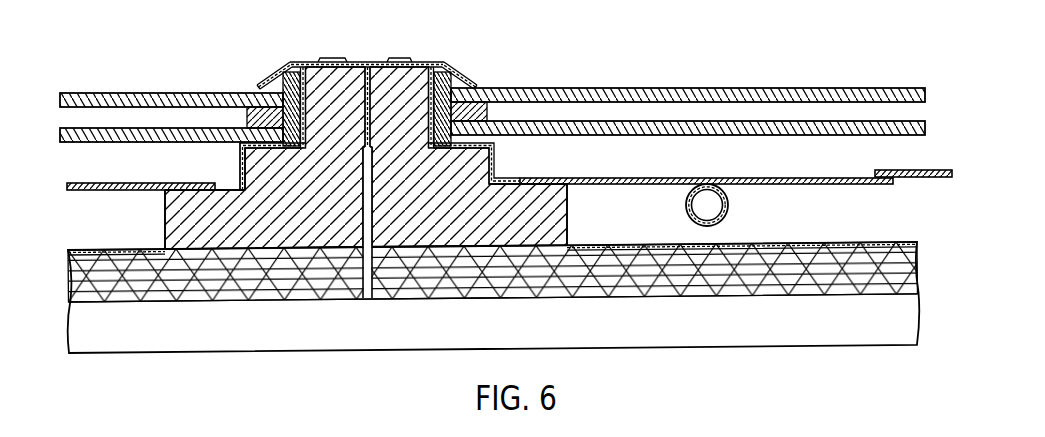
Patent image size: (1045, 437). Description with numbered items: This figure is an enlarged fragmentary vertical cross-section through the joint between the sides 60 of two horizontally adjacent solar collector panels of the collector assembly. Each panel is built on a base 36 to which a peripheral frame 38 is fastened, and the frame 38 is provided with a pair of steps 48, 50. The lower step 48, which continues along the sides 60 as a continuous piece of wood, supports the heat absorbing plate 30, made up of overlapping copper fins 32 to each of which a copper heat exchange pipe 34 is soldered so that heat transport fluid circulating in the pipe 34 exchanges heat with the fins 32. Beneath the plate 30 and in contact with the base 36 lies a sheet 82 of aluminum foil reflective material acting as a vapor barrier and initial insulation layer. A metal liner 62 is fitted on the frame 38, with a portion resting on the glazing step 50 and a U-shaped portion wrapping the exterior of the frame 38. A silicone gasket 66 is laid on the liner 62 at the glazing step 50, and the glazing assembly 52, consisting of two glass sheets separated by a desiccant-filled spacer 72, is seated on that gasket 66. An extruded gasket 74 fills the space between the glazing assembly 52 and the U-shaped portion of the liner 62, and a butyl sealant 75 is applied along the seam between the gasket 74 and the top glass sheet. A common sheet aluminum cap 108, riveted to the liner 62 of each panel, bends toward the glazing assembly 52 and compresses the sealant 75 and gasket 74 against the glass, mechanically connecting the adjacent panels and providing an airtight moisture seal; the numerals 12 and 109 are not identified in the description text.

The panel assembly 12 is at (493, 277).
The heat absorbing plate 30 is at (509, 183).
The copper fin 32 is at (97, 191).
The heat exchange pipe 34 is at (728, 203).
The base 36 is at (231, 284).
The peripheral frame 38 is at (313, 222).
The step 48 is at (220, 191).
The glazing step 50 is at (358, 166).
The glazing assembly 52 is at (164, 91).
The sides 60 is at (371, 184).
The metal liner 62 is at (372, 131).
The silicone gasket 66 is at (240, 156).
The desiccant-filled spacer 72 is at (246, 94).
The extruded gasket 74 is at (306, 112).
The butyl sealant 75 is at (278, 78).
The sheet of aluminum foil reflective material 82 is at (853, 240).
The sheet metal cap 108 is at (362, 51).
The bead 109 is at (388, 56).